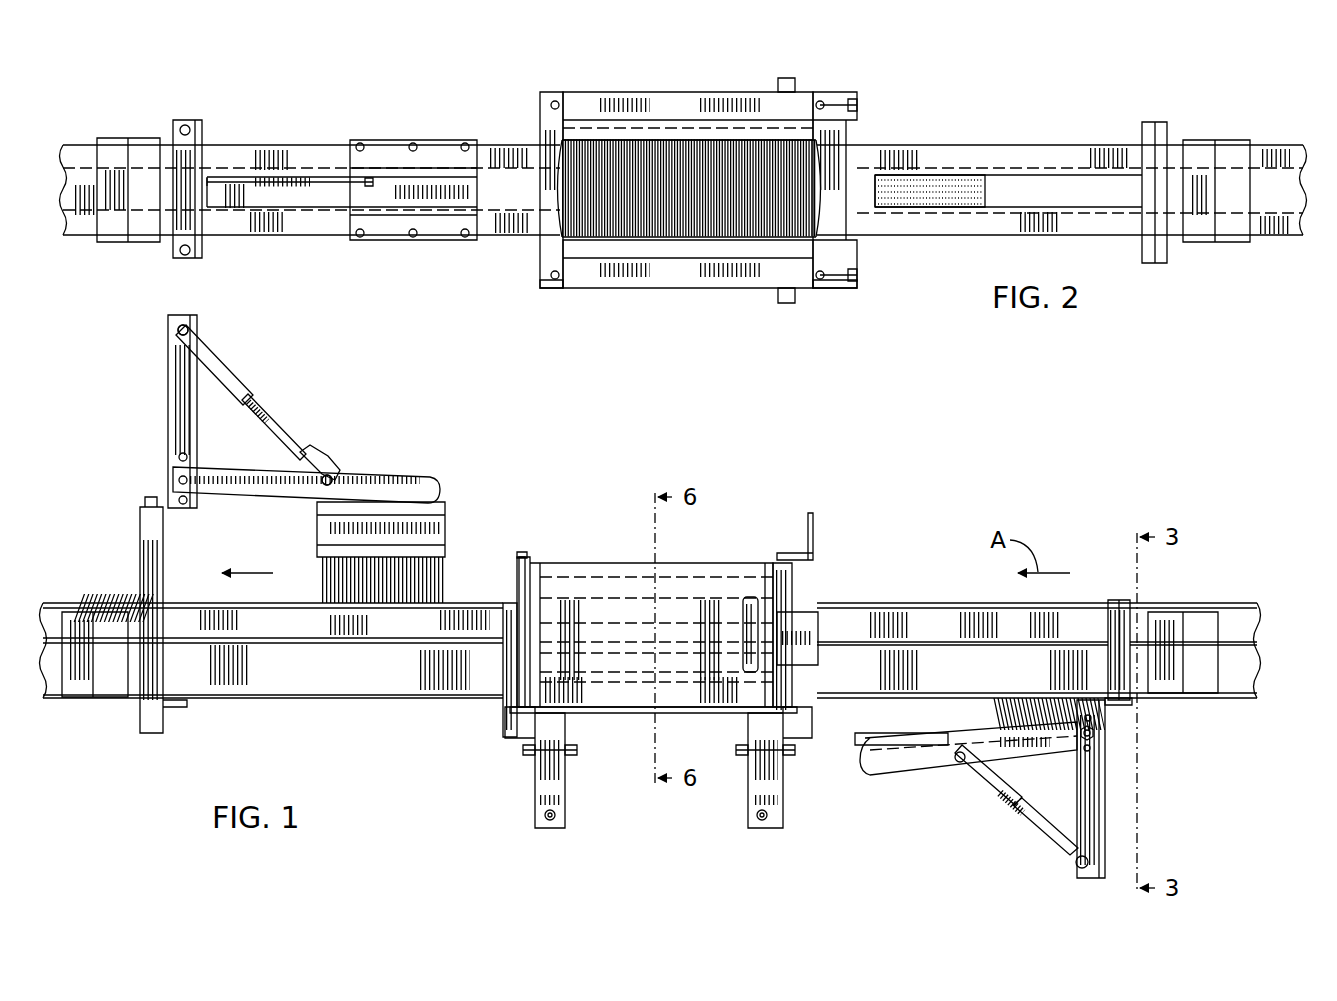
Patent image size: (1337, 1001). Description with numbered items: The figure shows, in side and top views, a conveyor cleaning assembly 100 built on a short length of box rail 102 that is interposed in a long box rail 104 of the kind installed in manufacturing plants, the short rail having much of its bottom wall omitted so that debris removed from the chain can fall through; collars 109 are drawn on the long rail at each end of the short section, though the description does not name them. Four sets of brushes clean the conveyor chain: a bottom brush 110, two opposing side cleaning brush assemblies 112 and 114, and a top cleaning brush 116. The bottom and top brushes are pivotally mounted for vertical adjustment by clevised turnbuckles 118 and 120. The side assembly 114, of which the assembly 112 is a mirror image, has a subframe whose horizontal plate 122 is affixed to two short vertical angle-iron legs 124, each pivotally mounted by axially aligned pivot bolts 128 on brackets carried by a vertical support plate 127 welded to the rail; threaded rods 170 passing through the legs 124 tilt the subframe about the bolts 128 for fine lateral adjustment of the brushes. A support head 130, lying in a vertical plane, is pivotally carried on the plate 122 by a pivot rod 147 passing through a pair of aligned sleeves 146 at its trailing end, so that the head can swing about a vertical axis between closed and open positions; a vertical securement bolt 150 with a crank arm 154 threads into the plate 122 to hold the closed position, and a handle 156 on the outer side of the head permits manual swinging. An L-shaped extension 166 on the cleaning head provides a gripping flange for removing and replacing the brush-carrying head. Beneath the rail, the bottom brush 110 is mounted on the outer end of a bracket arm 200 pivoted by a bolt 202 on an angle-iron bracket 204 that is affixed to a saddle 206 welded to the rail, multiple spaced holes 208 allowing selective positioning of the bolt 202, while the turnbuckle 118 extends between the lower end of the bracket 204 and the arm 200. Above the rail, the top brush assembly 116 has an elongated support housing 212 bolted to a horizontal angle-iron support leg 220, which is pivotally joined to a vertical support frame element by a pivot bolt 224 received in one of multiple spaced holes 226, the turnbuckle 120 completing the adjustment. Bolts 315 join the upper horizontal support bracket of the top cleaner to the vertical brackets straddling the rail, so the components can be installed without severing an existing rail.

In FIG. 2, the conveyor cleaning assembly 100 is at (1070, 80).
In FIG. 1, the conveyor cleaning assembly 100 is at (843, 533).
In FIG. 1, the box rail 102 is at (1110, 605).
In FIG. 2, the long box rail 104 is at (80, 145).
In FIG. 1, the long box rail 104 is at (58, 603).
In FIG. 2, the collar 109 is at (118, 140).
In FIG. 1, the collar 109 is at (110, 688).
In FIG. 2, the bottom brush 110 is at (930, 185).
In FIG. 1, the bottom brush 110 is at (945, 713).
In FIG. 2, the side cleaning brush assembly 112 is at (600, 92).
In FIG. 2, the side cleaning brush assembly 114 is at (555, 292).
In FIG. 2, the top cleaning brush 116 is at (392, 158).
In FIG. 1, the top cleaning brush 116 is at (450, 522).
In FIG. 1, the clevised turnbuckle 118 is at (1025, 815).
In FIG. 2, the clevised turnbuckle 120 is at (290, 186).
In FIG. 1, the clevised turnbuckle 120 is at (253, 402).
In FIG. 1, the horizontal plate 122 is at (632, 714).
In FIG. 1, the vertical angle-iron legs 124 is at (535, 810).
In FIG. 2, the vertical support plate 127 is at (548, 130).
In FIG. 1, the vertical support plate 127 is at (503, 655).
In FIG. 1, the pivot bolts 128 is at (523, 752).
In FIG. 2, the support head 130 is at (672, 278).
In FIG. 1, the sleeves 146 is at (519, 586).
In FIG. 2, the pivot rod 147 is at (525, 278).
In FIG. 1, the pivot rod 147 is at (528, 558).
In FIG. 2, the securement bolt 150 is at (822, 285).
In FIG. 2, the crank arm 154 is at (848, 293).
In FIG. 1, the crank arm 154 is at (822, 515).
In FIG. 2, the handle 156 is at (787, 303).
In FIG. 1, the handle 156 is at (744, 610).
In FIG. 1, the L-shaped extension 166 is at (820, 630).
In FIG. 1, the threaded rods 170 is at (555, 815).
In FIG. 1, the bracket arm 200 is at (943, 755).
In FIG. 1, the bolt 202 is at (1078, 738).
In FIG. 1, the angle-iron bracket 204 is at (1106, 840).
In FIG. 1, the saddle 206 is at (1117, 710).
In FIG. 1, the spaced holes 208 is at (1090, 722).
In FIG. 1, the support housing 212 is at (318, 525).
In FIG. 1, the horizontal angle-iron support leg 220 is at (168, 390).
In FIG. 1, the pivot bolt 224 is at (192, 465).
In FIG. 1, the spaced holes 226 is at (183, 457).
In FIG. 2, the bolts 315 is at (185, 130).
In FIG. 1, the bolts 315 is at (145, 502).